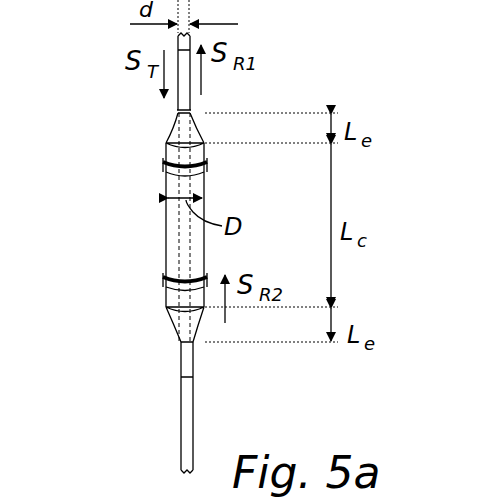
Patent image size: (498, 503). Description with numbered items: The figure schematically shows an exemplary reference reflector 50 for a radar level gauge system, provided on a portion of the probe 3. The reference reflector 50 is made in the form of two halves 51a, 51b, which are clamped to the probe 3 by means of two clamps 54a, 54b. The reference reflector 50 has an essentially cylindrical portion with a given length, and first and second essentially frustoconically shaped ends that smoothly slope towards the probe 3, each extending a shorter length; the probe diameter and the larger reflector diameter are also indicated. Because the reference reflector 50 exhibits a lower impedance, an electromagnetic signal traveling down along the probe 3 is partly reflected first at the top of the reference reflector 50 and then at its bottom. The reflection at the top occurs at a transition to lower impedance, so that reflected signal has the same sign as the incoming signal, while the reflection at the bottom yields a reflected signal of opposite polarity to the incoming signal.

The reference reflector 50 is at (191, 253).
The first half of reference reflector 51a is at (166, 238).
The second half of reference reflector 51b is at (205, 262).
The first clamp 54a is at (166, 172).
The second clamp 54b is at (165, 282).
The probe 3 is at (190, 397).